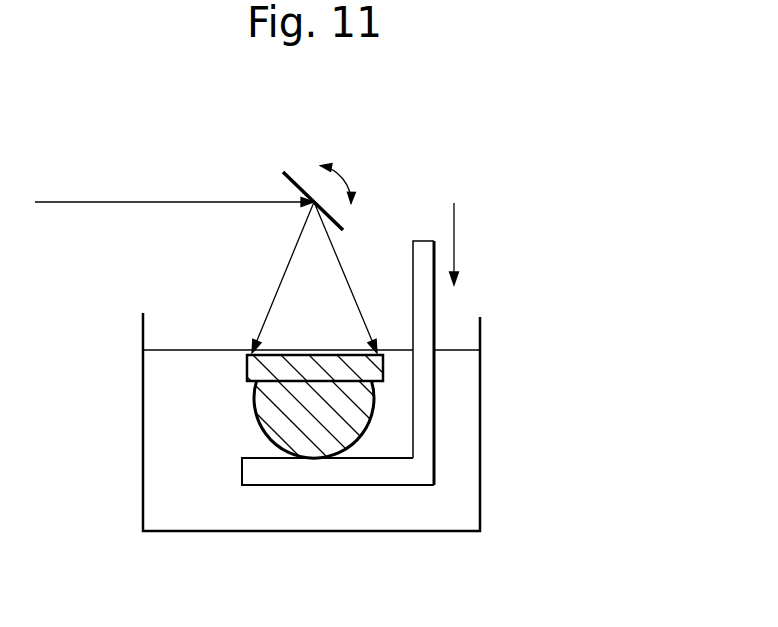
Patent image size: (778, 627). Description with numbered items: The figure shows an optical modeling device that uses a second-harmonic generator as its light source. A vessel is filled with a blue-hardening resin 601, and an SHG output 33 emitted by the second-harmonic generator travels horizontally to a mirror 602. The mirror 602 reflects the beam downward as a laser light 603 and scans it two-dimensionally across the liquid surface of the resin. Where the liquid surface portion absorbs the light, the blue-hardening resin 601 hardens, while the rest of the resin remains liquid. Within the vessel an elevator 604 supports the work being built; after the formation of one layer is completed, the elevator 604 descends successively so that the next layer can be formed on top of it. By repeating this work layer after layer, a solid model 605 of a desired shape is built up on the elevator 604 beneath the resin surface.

The SHG output 33 is at (107, 202).
The blue-hardening resin 601 is at (153, 482).
The mirror 602 is at (292, 178).
The laser light 603 is at (281, 278).
The elevator 604 is at (424, 250).
The solid model 605 is at (273, 418).